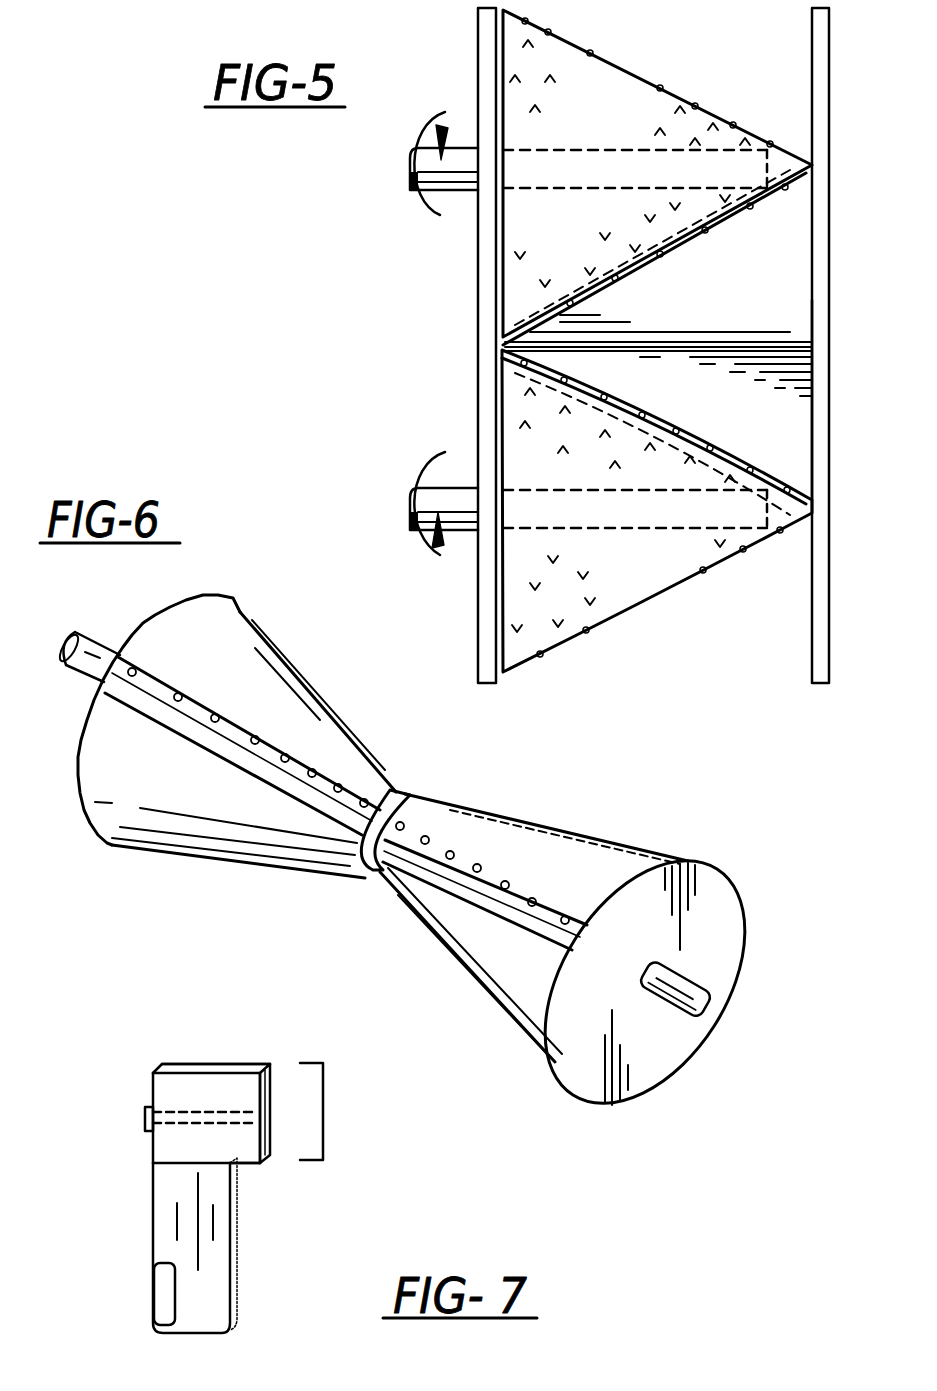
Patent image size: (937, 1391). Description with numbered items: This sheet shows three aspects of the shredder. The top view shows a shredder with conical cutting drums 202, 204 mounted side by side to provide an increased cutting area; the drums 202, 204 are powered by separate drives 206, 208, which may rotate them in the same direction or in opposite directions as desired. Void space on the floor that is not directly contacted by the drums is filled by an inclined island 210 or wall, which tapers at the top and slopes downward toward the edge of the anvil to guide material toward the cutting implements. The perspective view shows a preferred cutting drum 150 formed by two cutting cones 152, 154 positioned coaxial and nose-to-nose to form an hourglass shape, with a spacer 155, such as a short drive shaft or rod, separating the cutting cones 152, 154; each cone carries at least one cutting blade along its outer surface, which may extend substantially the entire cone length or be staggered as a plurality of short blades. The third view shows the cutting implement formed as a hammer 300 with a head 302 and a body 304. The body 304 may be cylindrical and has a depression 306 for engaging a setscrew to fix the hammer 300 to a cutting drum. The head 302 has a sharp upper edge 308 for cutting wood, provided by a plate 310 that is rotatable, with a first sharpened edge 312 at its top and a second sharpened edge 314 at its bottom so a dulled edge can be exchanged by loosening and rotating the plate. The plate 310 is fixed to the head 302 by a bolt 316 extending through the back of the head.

In FIG. 5, the drum 202 is at (608, 85).
In FIG. 5, the drum 204 is at (640, 573).
In FIG. 5, the drive 206 is at (460, 188).
In FIG. 5, the drive 208 is at (460, 528).
In FIG. 5, the inclined island 210 is at (790, 430).
In FIG. 6, the cutting drum 150 is at (505, 805).
In FIG. 6, the cutting cone 152 is at (165, 820).
In FIG. 6, the cutting cone 154 is at (520, 1000).
In FIG. 6, the spacer 155 is at (390, 788).
In FIG. 7, the hammer 300 is at (262, 1055).
In FIG. 7, the head 302 is at (172, 1085).
In FIG. 7, the body 304 is at (165, 1178).
In FIG. 7, the depression 306 is at (162, 1294).
In FIG. 7, the sharp upper edge 308 is at (228, 1062).
In FIG. 7, the plate 310 is at (323, 1112).
In FIG. 7, the first sharpened edge 312 is at (272, 1080).
In FIG. 7, the second sharpened edge 314 is at (272, 1162).
In FIG. 7, the bolt 316 is at (145, 1118).